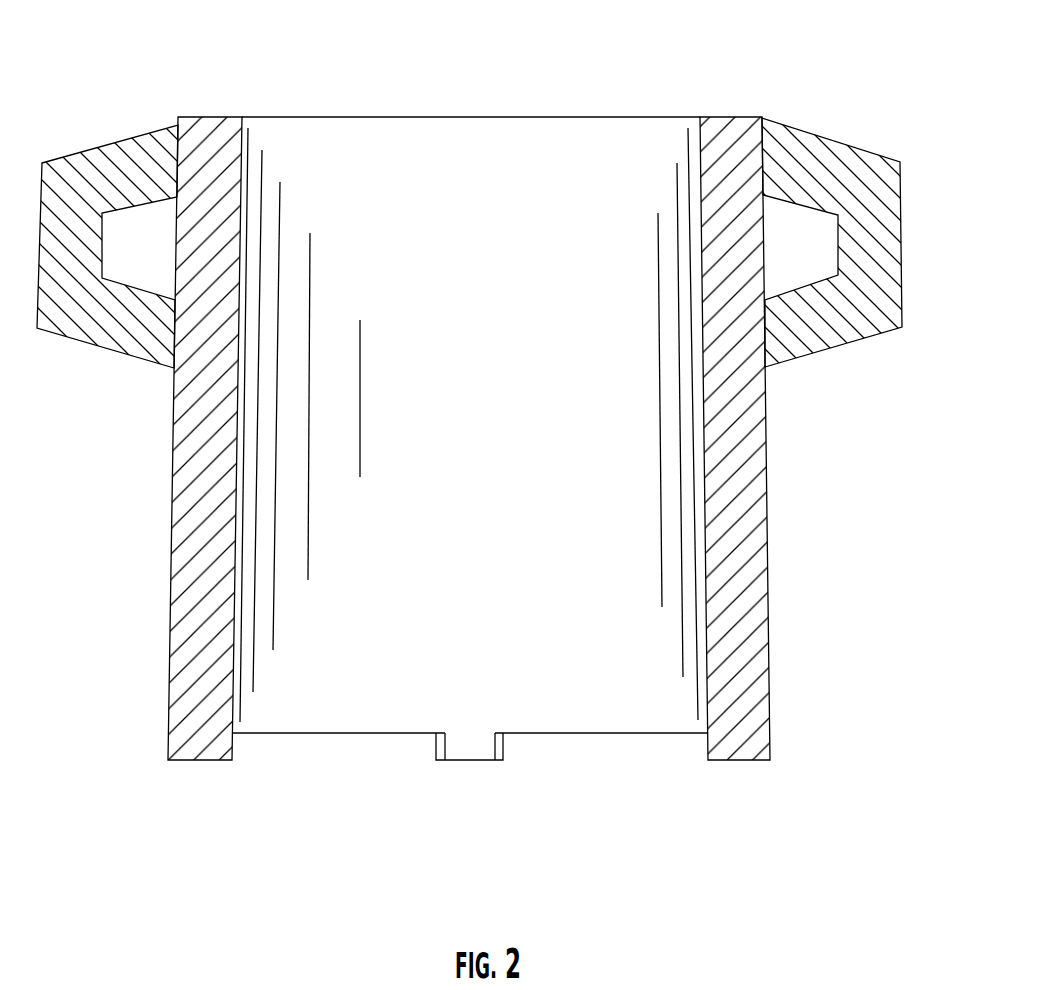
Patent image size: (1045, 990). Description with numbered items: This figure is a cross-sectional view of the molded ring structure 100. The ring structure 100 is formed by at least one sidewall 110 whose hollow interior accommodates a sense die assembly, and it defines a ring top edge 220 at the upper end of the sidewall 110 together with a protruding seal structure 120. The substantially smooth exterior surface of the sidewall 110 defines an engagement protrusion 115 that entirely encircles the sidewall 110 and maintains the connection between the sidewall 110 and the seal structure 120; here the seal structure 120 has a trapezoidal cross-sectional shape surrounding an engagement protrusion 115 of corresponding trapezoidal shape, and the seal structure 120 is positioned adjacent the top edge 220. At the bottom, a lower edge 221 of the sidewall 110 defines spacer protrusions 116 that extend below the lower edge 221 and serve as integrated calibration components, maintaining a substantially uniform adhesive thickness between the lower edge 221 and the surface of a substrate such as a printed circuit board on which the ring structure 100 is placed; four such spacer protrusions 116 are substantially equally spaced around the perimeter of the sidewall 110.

The molded ring structure 100 is at (487, 435).
The sidewall 110 is at (162, 431).
The engagement protrusion 115 is at (138, 233).
The spacer protrusions 116 is at (738, 736).
The seal structure 120 is at (921, 318).
The ring top edge 220 is at (774, 119).
The lower edge 221 is at (343, 736).